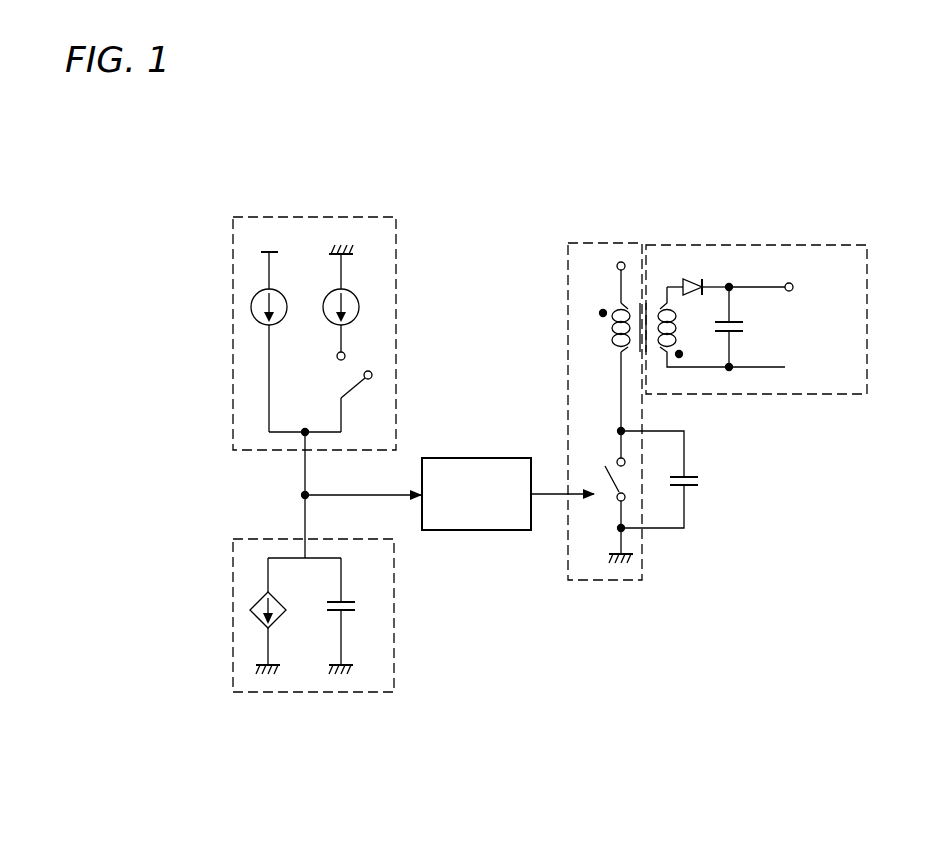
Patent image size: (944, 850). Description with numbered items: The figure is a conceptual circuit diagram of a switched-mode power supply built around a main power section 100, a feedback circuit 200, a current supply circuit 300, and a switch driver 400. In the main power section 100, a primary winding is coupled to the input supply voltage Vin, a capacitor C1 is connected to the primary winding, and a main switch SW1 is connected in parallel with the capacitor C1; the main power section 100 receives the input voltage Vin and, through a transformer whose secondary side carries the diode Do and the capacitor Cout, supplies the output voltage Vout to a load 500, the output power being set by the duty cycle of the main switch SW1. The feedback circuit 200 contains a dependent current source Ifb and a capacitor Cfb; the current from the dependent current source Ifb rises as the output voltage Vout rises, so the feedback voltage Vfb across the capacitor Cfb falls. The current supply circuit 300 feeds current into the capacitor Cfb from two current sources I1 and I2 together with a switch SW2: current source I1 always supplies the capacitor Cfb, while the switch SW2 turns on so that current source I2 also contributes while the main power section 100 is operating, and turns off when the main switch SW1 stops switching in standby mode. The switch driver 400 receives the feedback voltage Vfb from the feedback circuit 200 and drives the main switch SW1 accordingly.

The main power section 100 is at (651, 370).
The feedback circuit 200 is at (365, 615).
The current supply circuit 300 is at (314, 293).
The switch driver 400 is at (476, 458).
The load 500 is at (756, 279).
The current source I1 is at (281, 342).
The current source I2 is at (353, 298).
The switch SW2 is at (330, 392).
The feedback voltage Vfb is at (362, 495).
The dependent current source Ifb is at (282, 616).
The capacitor Cfb is at (358, 616).
The input supply voltage Vin is at (601, 266).
The main switch SW1 is at (597, 492).
The capacitor C1 is at (678, 479).
The output diode Do is at (698, 272).
The output capacitor Cout is at (761, 327).
The output voltage Vout is at (794, 287).